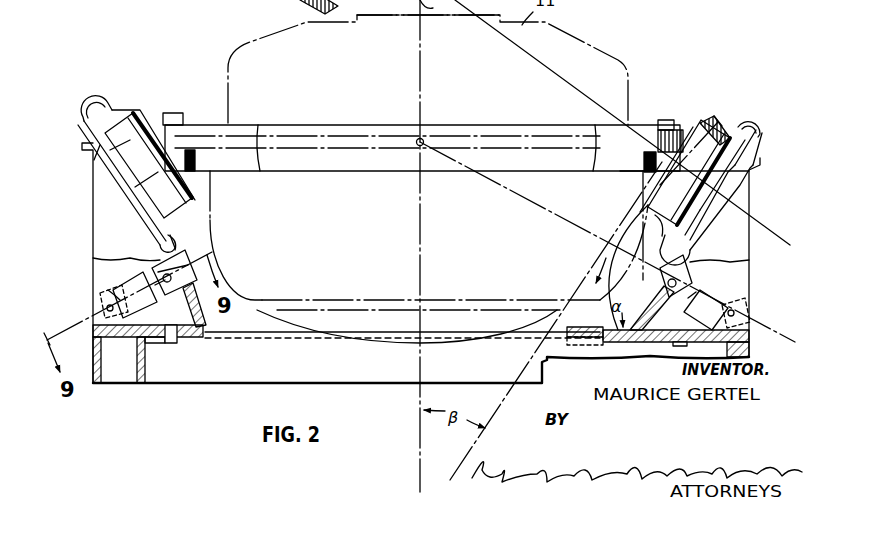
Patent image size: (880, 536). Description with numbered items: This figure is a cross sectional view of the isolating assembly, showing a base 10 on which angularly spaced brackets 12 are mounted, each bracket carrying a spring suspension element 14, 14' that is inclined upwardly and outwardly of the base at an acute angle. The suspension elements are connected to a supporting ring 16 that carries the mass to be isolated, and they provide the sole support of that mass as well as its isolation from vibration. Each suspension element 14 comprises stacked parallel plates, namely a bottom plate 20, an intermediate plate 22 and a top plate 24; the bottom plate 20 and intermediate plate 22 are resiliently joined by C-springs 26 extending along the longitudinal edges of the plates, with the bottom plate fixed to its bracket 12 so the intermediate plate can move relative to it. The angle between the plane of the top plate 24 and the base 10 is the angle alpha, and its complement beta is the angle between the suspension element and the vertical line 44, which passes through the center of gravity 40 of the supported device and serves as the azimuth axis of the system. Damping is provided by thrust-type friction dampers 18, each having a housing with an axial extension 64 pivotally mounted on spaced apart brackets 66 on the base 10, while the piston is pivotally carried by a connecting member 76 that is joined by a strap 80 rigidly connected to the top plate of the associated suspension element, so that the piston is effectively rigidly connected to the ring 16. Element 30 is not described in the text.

The base 10 is at (145, 360).
The bracket 12 is at (92, 185).
The spring suspension element 14 is at (685, 153).
The spring suspension element 14' is at (136, 147).
The supporting ring 16 is at (514, 126).
The damper 18 is at (143, 303).
The bottom plate 20 is at (758, 137).
The intermediate plate 22 is at (750, 120).
The top plate 24 is at (712, 119).
The C-spring 26 is at (760, 117).
The plate 30 is at (720, 123).
The center of gravity 40 is at (416, 139).
The vertical line 44 is at (420, 72).
The axial extension 64 is at (110, 288).
The bracket 66 is at (100, 298).
The connecting member 76 is at (155, 265).
The strap 80 is at (196, 220).